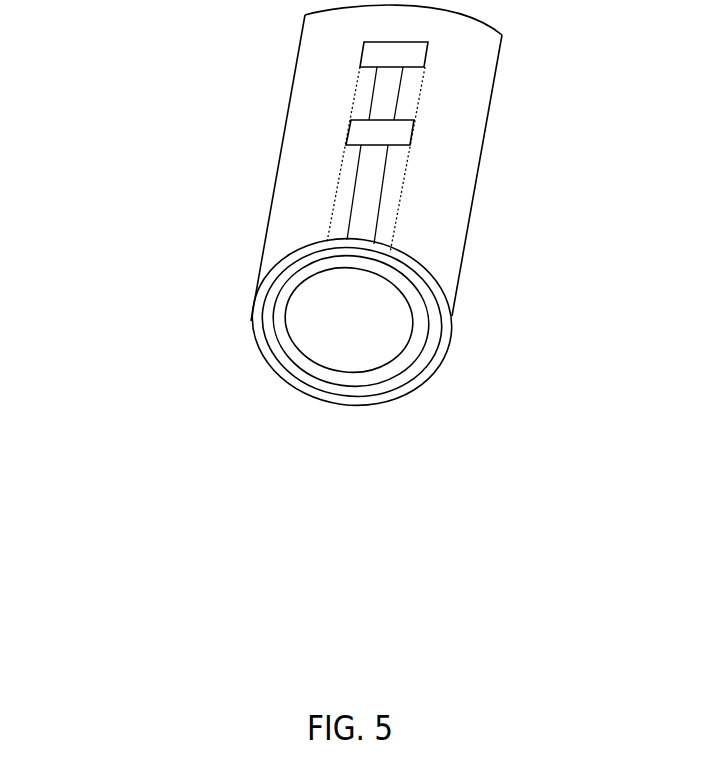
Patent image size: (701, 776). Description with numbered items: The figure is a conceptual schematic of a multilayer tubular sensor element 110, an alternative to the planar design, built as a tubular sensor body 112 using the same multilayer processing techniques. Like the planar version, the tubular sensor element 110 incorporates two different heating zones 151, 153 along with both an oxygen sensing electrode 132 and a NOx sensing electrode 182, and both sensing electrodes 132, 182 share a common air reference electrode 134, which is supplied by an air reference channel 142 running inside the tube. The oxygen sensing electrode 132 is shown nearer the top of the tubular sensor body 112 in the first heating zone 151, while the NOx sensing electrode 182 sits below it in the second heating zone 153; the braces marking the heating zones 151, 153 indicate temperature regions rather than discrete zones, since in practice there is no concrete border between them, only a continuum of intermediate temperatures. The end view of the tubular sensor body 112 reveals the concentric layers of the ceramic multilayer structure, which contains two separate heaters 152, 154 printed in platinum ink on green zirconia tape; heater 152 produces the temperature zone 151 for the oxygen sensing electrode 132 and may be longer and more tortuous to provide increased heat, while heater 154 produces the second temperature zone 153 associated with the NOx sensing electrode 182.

The multilayer tubular sensor element 110 is at (507, 134).
The tubular sensor body 112 is at (490, 109).
The oxygen sensing electrode 132 is at (428, 60).
The air reference electrode 134 is at (365, 220).
The air reference channel 142 is at (328, 243).
The first heating zone 151 is at (297, 13).
The heater element (heater #1) 152 is at (283, 339).
The second heating zone 153 is at (243, 330).
The heater element (heater #2) 154 is at (267, 315).
The NOx sensing electrode 182 is at (414, 138).